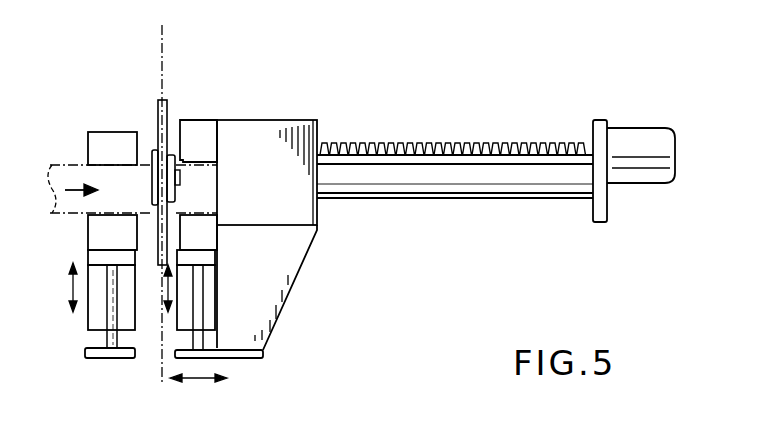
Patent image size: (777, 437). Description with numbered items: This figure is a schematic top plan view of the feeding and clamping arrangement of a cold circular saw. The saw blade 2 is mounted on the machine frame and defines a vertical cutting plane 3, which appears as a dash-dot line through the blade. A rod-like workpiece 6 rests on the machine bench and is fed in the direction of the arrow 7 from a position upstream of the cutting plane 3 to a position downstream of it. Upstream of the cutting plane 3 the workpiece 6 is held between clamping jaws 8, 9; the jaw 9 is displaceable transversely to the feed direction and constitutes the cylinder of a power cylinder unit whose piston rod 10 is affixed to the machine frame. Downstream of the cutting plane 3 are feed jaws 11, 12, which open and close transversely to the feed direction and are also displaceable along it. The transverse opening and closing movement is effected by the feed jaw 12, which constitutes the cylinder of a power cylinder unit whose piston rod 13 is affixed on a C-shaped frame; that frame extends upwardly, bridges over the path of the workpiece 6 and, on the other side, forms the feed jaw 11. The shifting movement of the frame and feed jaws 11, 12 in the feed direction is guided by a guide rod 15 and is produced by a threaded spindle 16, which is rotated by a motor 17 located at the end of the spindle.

The saw blade 2 is at (157, 118).
The vertical cutting plane 3 is at (165, 57).
The rod-like workpiece 6 is at (57, 160).
The arrow 7 is at (100, 237).
The clamping jaw 8 is at (100, 133).
The clamping jaw 9 is at (75, 249).
The piston rod 10 is at (110, 339).
The feed jaw 11 is at (203, 132).
The feed jaw 12 is at (207, 241).
The piston rod 13 is at (198, 339).
The guide rod 15 is at (530, 186).
The threaded spindle 16 is at (408, 143).
The motor 17 is at (643, 130).